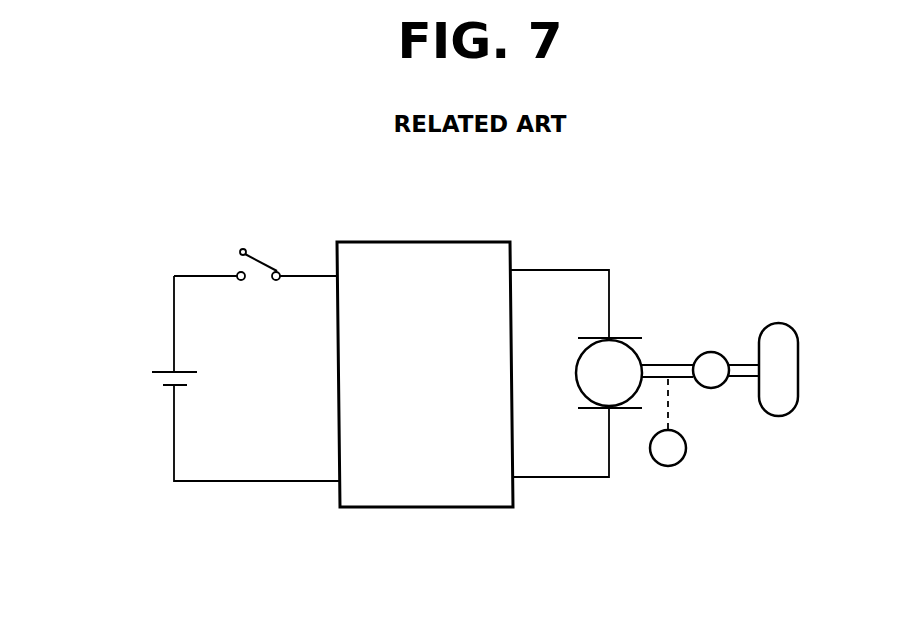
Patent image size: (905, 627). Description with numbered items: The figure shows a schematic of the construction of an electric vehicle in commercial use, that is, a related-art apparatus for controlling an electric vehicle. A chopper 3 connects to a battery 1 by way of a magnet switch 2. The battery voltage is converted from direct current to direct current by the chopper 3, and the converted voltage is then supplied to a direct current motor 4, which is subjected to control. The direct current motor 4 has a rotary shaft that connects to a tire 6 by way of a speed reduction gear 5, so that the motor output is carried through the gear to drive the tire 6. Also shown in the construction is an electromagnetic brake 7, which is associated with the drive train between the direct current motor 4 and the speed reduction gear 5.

The battery 1 is at (165, 368).
The magnet switch 2 is at (255, 254).
The chopper 3 is at (435, 241).
The direct current motor 4 is at (641, 350).
The speed reduction gear 5 is at (708, 352).
The tire 6 is at (778, 416).
The electromagnetic brake 7 is at (668, 466).